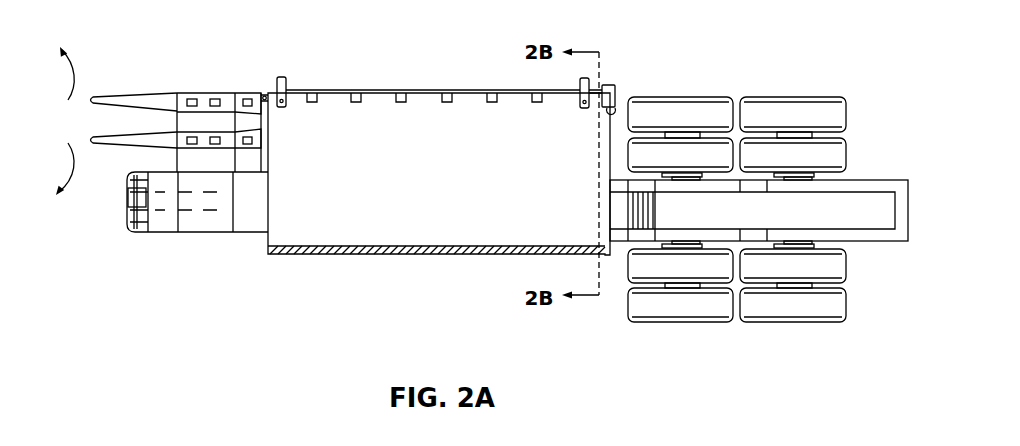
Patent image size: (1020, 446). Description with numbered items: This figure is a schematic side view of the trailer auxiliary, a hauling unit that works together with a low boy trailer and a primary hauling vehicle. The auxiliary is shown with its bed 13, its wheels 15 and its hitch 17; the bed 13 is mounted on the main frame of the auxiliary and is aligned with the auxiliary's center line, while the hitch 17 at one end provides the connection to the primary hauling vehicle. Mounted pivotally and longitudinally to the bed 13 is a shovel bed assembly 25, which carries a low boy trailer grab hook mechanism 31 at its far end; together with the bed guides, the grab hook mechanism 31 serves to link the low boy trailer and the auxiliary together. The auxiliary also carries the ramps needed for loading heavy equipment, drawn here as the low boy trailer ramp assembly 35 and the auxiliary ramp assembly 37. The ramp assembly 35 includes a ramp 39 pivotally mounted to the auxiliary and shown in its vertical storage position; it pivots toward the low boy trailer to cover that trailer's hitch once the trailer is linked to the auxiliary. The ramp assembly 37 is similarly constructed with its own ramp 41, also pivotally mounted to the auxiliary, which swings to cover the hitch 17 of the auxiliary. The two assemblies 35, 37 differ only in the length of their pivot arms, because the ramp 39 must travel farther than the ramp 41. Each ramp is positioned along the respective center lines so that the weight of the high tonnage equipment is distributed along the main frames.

The bed 13 is at (445, 265).
The wheels 15 is at (826, 332).
The hitch 17 is at (197, 239).
The shovel bed assembly 25 is at (374, 82).
The low boy trailer grab hook mechanism 31 is at (617, 80).
The low boy trailer ramp assembly 35 is at (108, 94).
The auxiliary ramp assembly 37 is at (108, 148).
The ramp 39 is at (197, 80).
The ramp 41 is at (97, 126).